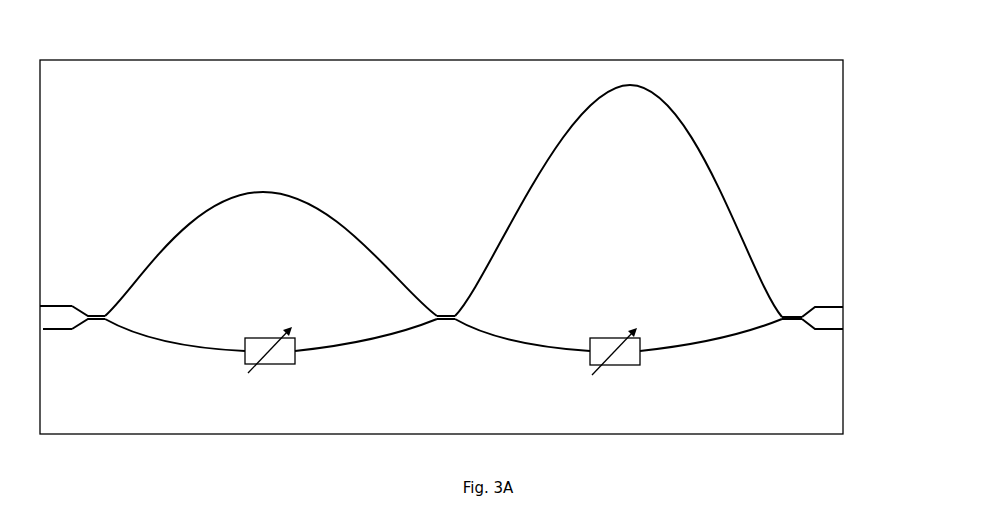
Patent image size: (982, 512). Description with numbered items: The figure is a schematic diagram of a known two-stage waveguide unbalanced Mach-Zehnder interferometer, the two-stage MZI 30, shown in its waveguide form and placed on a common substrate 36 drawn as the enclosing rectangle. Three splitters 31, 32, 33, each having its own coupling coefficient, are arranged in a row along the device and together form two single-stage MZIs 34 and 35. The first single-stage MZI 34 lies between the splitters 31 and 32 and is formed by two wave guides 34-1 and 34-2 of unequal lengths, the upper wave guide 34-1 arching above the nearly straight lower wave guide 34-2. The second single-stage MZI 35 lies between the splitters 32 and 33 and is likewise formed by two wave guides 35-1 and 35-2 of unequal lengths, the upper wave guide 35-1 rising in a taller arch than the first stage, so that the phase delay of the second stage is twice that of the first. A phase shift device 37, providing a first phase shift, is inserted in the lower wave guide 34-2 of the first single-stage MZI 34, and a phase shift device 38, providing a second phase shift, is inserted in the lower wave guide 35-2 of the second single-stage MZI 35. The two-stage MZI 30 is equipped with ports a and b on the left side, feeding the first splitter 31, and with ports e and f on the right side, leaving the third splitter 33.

The two-stage MZI 30 is at (112, 42).
The splitter 31 is at (98, 312).
The splitter 32 is at (446, 312).
The splitter 33 is at (793, 312).
The first single-stage MZI 34 is at (192, 177).
The wave guide 34-1 is at (140, 280).
The wave guide 34-2 is at (192, 347).
The second single-stage MZI 35 is at (520, 141).
The wave guide 35-1 is at (493, 248).
The wave guide 35-2 is at (540, 348).
The common substrate 36 is at (803, 94).
The phase shift device 37 is at (275, 365).
The phase shift device 38 is at (620, 366).
The port a is at (56, 303).
The port b is at (61, 333).
The port e is at (828, 305).
The port f is at (833, 331).